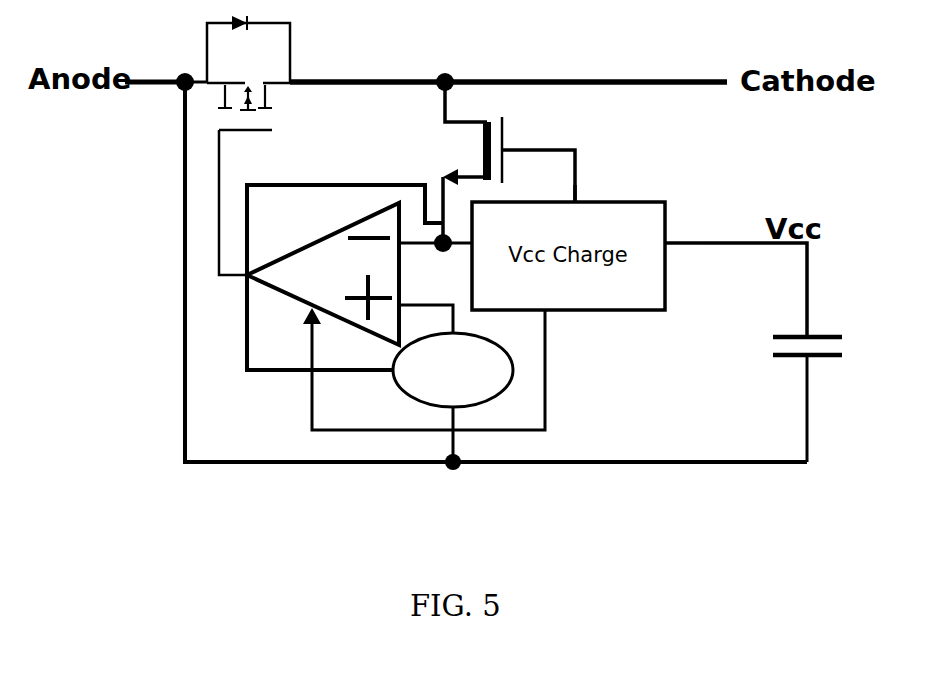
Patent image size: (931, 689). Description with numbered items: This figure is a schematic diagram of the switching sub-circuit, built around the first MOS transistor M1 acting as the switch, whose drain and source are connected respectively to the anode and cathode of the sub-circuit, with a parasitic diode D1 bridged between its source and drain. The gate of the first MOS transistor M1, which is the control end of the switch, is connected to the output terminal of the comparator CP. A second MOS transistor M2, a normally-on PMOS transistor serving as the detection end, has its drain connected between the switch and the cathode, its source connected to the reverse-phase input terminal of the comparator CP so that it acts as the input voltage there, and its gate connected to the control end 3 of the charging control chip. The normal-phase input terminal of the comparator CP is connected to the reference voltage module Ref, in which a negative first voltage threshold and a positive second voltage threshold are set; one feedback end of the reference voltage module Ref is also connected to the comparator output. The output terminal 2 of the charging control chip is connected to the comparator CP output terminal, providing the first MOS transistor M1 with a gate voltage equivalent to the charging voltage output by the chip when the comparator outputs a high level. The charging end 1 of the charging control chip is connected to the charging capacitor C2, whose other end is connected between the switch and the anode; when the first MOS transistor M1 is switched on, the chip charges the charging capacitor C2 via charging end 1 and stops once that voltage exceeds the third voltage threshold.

The charging end 1 is at (682, 224).
The output terminal 2 is at (447, 207).
The control end 3 is at (563, 184).
The parasitic diode D1 is at (248, 41).
The first MOS transistor M1 is at (257, 106).
The second MOS transistor M2 is at (509, 162).
The charging capacitor C2 is at (813, 384).
The comparator CP is at (323, 274).
The reference voltage module Ref is at (453, 370).